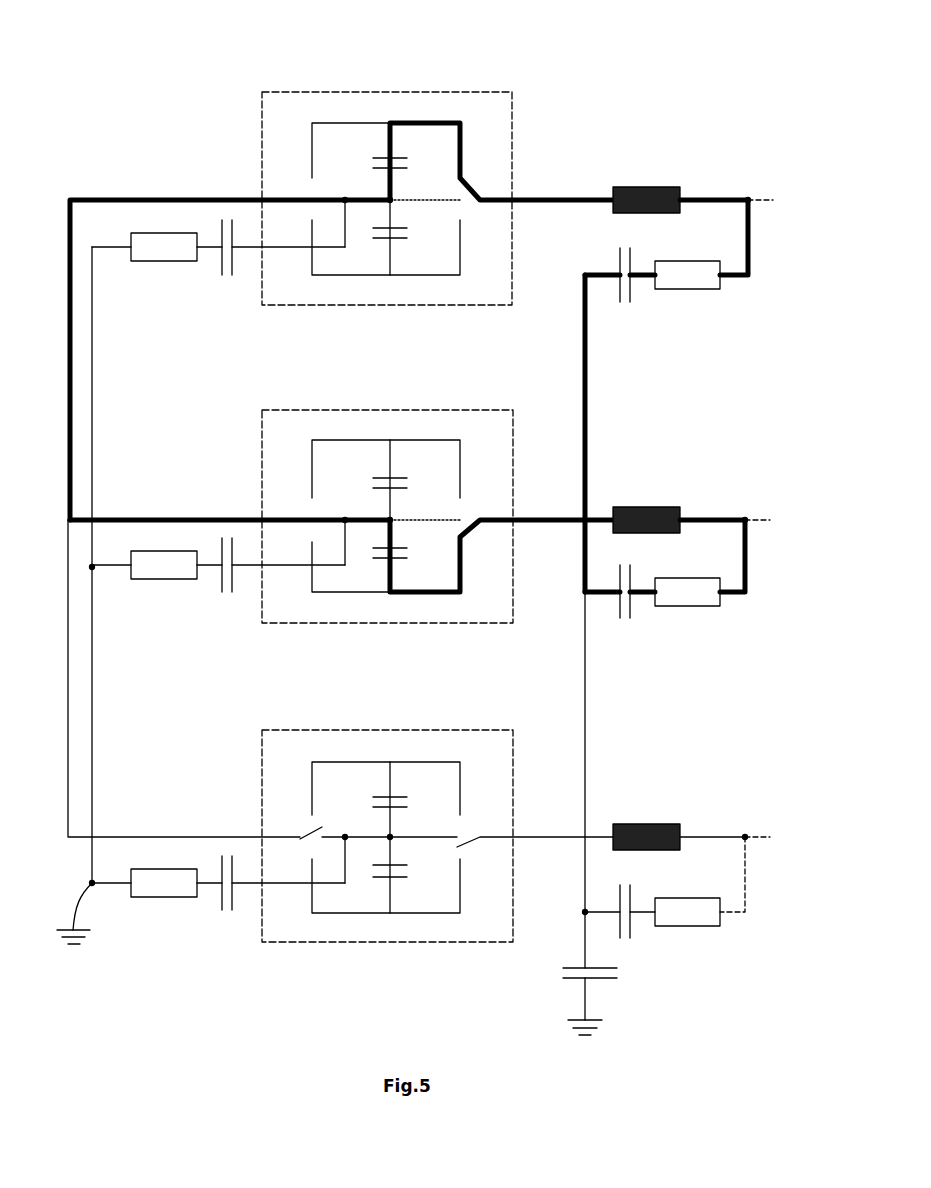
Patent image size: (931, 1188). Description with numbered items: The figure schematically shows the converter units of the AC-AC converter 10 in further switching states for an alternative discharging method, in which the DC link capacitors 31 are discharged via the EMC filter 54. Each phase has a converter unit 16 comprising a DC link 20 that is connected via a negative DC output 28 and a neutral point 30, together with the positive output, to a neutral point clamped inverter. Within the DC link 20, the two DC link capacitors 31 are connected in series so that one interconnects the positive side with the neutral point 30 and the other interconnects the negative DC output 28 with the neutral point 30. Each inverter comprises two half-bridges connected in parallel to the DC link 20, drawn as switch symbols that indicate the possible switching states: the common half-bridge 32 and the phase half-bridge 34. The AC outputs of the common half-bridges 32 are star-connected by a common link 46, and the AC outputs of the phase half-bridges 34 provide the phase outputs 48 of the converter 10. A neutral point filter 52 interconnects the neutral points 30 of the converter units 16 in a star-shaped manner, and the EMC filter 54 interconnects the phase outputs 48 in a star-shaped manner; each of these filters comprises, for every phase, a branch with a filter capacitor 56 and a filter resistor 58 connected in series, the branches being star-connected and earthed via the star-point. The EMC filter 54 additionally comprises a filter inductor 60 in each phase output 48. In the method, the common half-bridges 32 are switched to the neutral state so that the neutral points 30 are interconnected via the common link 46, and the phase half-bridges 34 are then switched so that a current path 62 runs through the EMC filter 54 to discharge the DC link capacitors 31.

The AC-AC converter 10 is at (678, 84).
The converter unit 16 is at (513, 175).
The DC link 20 is at (390, 98).
The negative DC output 28 is at (398, 278).
The neutral point 30 is at (437, 520).
The DC link capacitor 31 is at (405, 155).
The common half-bridge 32 is at (310, 110).
The phase half-bridge 34 is at (455, 108).
The common link 46 is at (95, 717).
The phase output 48 is at (757, 197).
The neutral point filter 52 is at (150, 178).
The EMC filter 54 is at (756, 168).
The filter capacitor 56 is at (212, 262).
The filter resistor 58 is at (140, 262).
The filter inductor 60 is at (640, 186).
The current path 62 is at (145, 520).